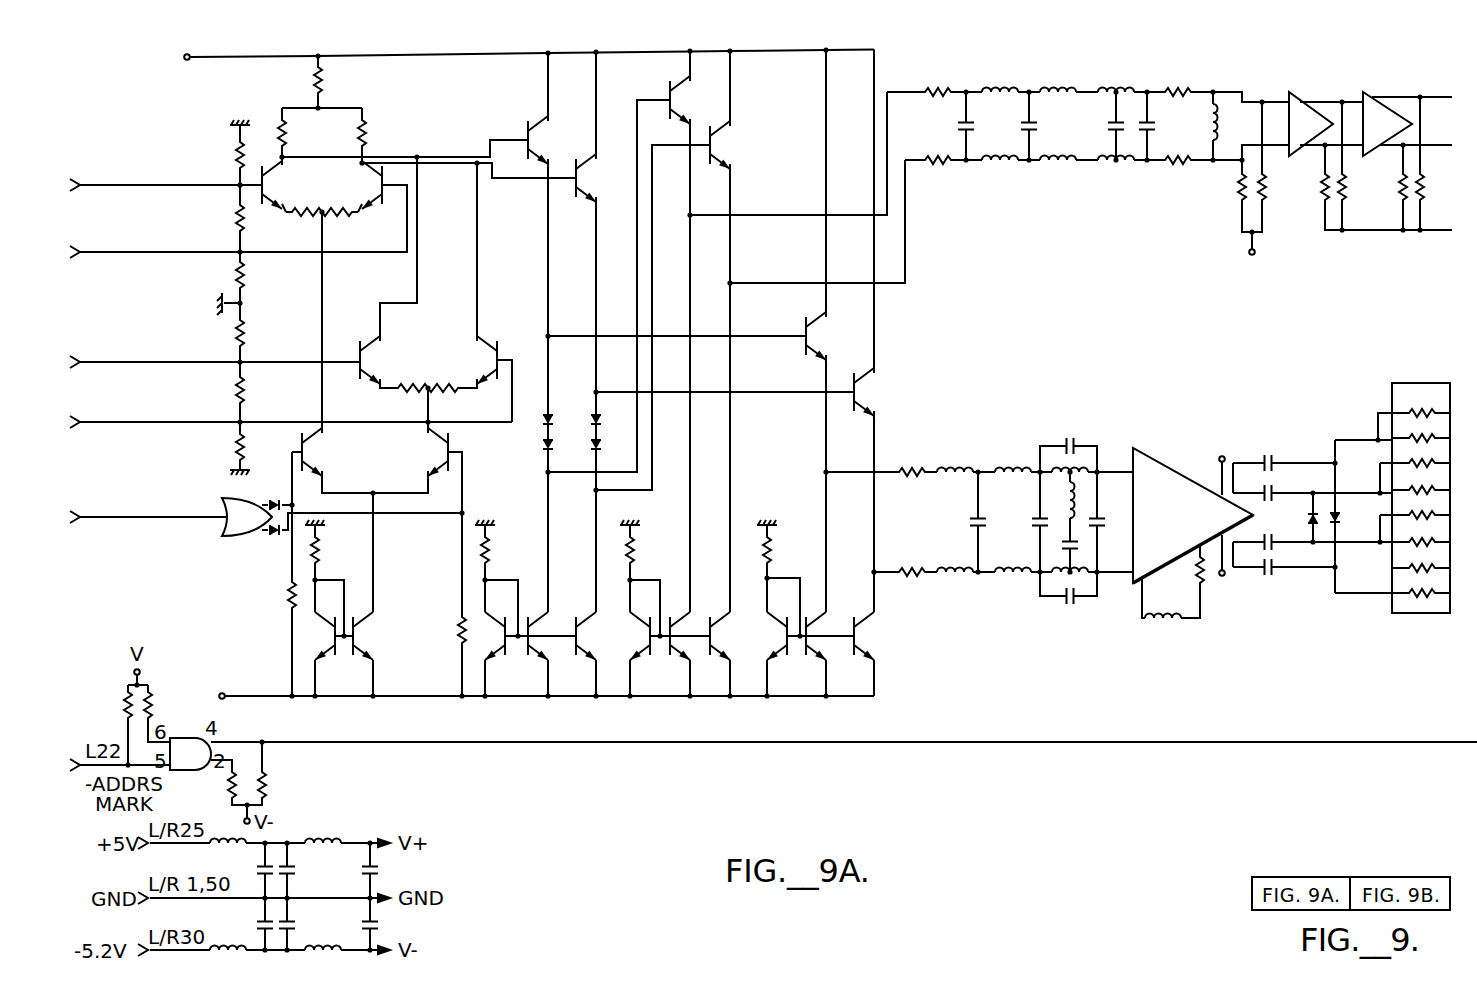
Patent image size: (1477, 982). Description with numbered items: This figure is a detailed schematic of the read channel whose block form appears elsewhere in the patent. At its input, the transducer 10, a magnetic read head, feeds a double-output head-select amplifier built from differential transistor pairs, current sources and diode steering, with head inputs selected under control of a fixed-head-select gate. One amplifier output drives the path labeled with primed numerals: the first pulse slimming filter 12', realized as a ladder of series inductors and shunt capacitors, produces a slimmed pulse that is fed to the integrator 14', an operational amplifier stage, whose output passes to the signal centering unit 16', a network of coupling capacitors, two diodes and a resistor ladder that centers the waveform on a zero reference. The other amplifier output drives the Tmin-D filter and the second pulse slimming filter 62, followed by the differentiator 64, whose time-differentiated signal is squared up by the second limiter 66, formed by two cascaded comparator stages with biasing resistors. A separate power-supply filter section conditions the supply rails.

The transducer 10 is at (870, 44).
The second pulse slimming filter 62 is at (1005, 84).
The differentiator 64 is at (1184, 84).
The second limiter 66 is at (1388, 82).
The first pulse slimming filter 12' is at (1015, 538).
The integrator 14' is at (1177, 538).
The signal centering unit 16' is at (1341, 525).